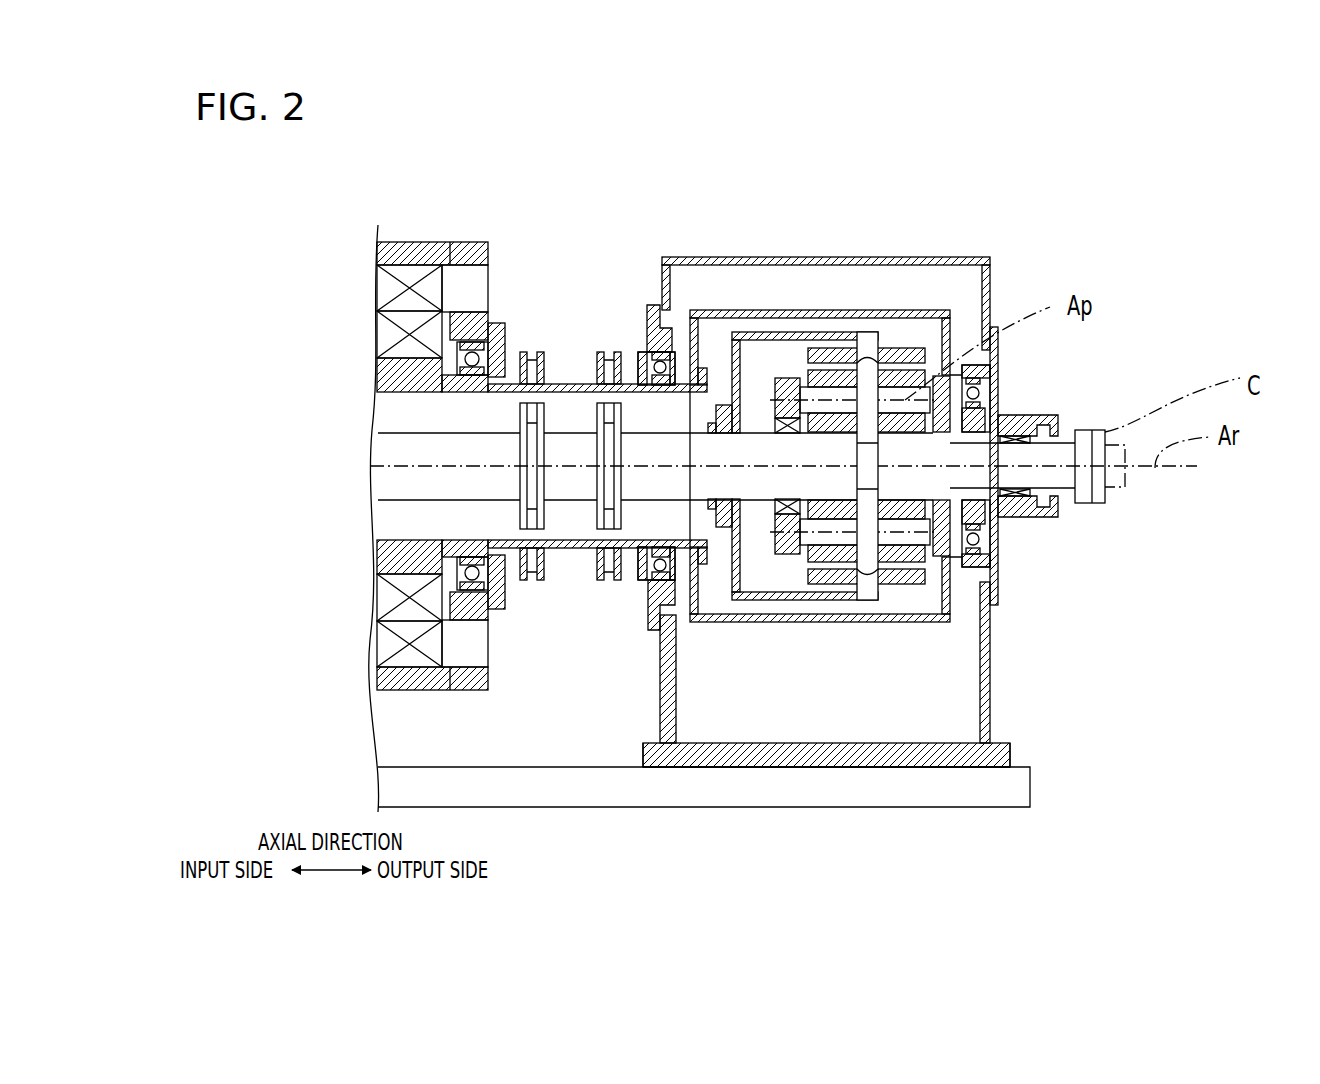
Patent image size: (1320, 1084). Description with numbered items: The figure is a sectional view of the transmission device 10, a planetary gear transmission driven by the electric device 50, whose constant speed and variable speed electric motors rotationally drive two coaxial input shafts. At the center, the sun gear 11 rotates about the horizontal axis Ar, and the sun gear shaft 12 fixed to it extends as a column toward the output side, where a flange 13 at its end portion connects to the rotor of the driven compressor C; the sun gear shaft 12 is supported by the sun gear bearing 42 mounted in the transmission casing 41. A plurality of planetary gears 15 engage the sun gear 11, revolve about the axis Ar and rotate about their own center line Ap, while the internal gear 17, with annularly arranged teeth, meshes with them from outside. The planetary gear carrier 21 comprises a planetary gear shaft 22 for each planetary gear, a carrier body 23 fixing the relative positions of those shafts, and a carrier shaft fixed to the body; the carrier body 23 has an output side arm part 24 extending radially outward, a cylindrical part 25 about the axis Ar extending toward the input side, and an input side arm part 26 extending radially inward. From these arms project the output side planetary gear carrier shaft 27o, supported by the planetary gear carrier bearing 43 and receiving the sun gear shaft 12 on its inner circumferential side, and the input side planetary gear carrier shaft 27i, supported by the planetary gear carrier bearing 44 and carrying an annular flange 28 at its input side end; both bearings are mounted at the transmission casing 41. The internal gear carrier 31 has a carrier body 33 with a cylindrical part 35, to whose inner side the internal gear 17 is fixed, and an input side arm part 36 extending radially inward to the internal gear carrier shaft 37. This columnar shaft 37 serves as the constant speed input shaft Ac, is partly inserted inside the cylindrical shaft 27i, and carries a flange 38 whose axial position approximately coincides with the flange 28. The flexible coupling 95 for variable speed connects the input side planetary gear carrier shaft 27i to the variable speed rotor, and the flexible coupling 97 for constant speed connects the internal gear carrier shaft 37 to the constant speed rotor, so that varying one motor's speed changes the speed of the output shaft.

The transmission device 10 is at (986, 244).
The sun gear 11 is at (975, 552).
The sun gear shaft 12 is at (1065, 487).
The flange 13 is at (1095, 500).
The planetary gears 15 is at (788, 376).
The internal gear 17 is at (912, 352).
The planetary gear carrier 21 is at (930, 306).
The planetary gear shaft 22 is at (824, 368).
The carrier body 23 is at (728, 316).
The output side arm part 24 is at (958, 330).
The cylindrical part 25 is at (848, 331).
The input side arm part 26 is at (682, 383).
The input side planetary gear carrier shaft 27i is at (660, 347).
The output side planetary gear carrier shaft 27o is at (955, 416).
The annular flange 28 is at (612, 332).
The internal gear carrier 31 is at (678, 486).
The carrier body 33 is at (798, 843).
The cylindrical part 35 is at (830, 563).
The input side arm part 36 is at (787, 600).
The internal gear carrier shaft 37 is at (675, 542).
The flange 38 is at (648, 482).
The transmission casing 41 is at (657, 259).
The sun gear bearing 42 is at (1030, 520).
The planetary gear carrier bearing 43 is at (980, 394).
The planetary gear carrier bearing 44 is at (643, 357).
The electric device 50 is at (426, 232).
The flexible coupling for variable speed 95 is at (571, 383).
The flexible coupling for constant speed 97 is at (570, 490).